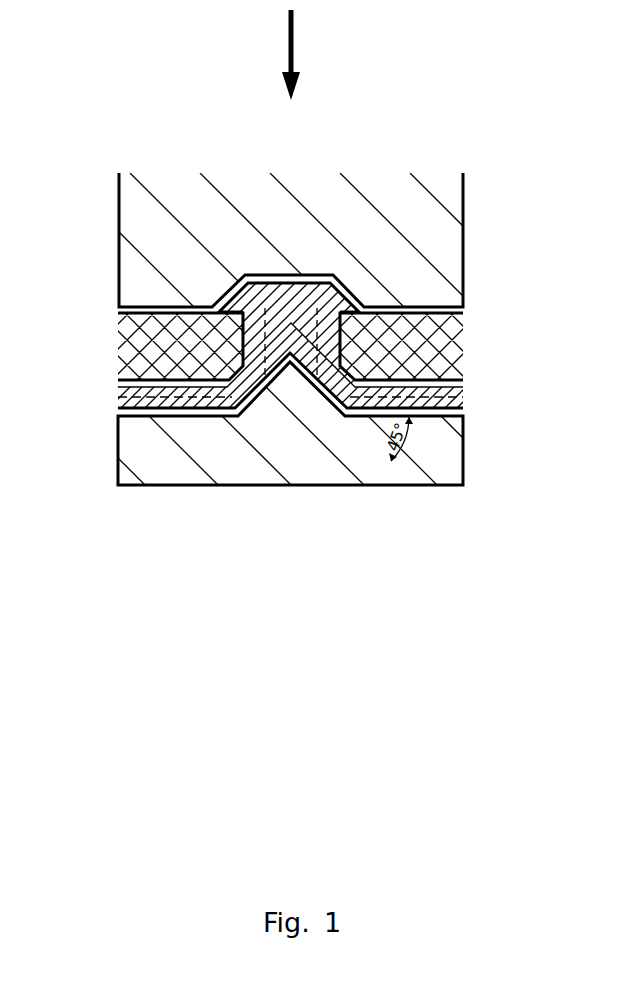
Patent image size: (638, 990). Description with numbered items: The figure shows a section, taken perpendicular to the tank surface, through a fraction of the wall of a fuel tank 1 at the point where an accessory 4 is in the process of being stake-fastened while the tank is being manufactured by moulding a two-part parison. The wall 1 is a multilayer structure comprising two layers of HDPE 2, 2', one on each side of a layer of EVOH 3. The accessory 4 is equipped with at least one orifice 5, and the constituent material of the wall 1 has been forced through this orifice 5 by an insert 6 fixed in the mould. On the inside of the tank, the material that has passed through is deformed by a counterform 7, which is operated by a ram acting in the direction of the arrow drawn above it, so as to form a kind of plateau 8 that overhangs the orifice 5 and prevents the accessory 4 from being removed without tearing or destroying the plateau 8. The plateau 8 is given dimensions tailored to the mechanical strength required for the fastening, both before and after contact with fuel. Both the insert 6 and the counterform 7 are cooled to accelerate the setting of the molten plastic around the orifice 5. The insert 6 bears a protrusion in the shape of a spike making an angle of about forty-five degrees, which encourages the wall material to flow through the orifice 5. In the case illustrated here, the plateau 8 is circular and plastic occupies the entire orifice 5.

The wall of a fuel tank 1 is at (291, 341).
The layer of HDPE 2 is at (337, 380).
The layer of HDPE 2' is at (321, 356).
The layer of EVOH 3 is at (118, 397).
The accessory 4 is at (283, 346).
The orifice 5 is at (338, 328).
The insert 6 is at (266, 423).
The counterform 7 is at (302, 240).
The plateau 8 is at (327, 302).